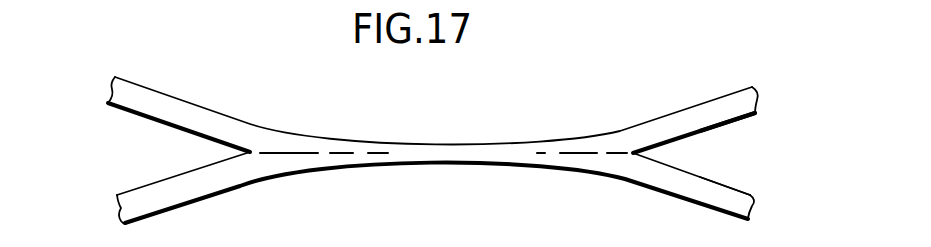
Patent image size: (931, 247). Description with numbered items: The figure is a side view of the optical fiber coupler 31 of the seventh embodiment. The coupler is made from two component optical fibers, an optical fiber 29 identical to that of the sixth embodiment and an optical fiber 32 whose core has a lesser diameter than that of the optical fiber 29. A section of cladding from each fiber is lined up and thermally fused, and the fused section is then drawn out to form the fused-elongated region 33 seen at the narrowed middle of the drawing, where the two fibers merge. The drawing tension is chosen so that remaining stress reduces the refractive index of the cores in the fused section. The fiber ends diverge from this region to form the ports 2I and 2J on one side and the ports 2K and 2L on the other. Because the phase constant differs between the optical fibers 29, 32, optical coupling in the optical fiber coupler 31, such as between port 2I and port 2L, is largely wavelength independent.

The optical fiber 29 is at (688, 117).
The optical fiber coupler 31 is at (513, 128).
The optical fiber 32 is at (685, 192).
The fused-elongated region 33 is at (465, 165).
The port 2I is at (165, 114).
The port 2J is at (167, 190).
The port 2K is at (747, 109).
The port 2L is at (746, 200).